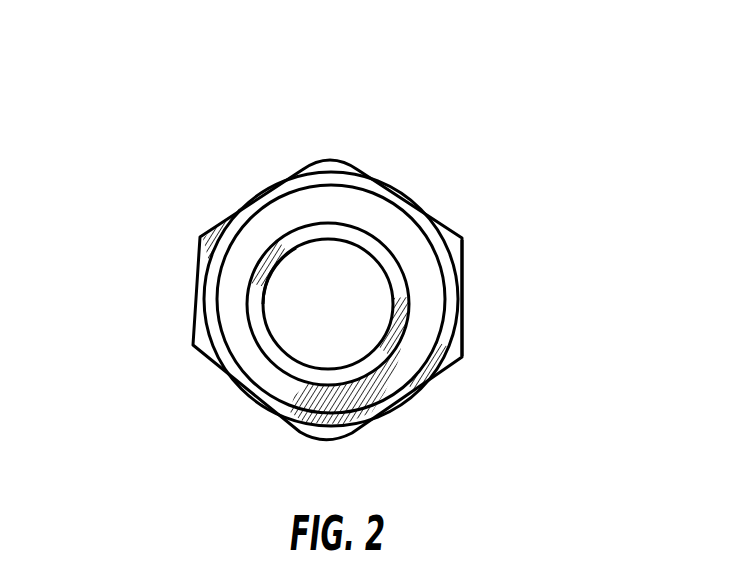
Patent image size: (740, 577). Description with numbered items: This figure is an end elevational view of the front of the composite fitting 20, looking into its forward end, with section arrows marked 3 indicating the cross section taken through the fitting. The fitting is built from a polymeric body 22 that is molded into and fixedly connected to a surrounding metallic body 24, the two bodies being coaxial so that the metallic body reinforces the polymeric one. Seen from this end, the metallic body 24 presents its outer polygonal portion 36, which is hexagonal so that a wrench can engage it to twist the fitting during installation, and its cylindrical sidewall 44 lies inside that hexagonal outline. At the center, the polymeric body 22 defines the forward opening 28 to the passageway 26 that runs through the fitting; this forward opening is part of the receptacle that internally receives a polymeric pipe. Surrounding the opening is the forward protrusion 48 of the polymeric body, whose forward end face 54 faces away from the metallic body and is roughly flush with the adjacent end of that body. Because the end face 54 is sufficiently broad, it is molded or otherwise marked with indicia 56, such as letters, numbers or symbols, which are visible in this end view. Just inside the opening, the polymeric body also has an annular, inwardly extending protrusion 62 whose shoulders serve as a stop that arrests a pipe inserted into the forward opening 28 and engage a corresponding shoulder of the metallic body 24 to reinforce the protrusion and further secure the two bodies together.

The composite fitting 20 is at (453, 105).
The polymeric body 22 is at (423, 260).
The metallic body 24 is at (465, 312).
The passageway 26 is at (349, 345).
The forward opening 28 is at (270, 335).
The outer polygonal portion 36 is at (337, 157).
The cylindrical sidewall 44 is at (213, 216).
The forward protrusion 48 is at (256, 355).
The forward end face 54 is at (270, 390).
The indicia 56 is at (358, 207).
The inwardly extending protrusion 62 is at (270, 277).
The section line 3- 3 is at (162, 302).